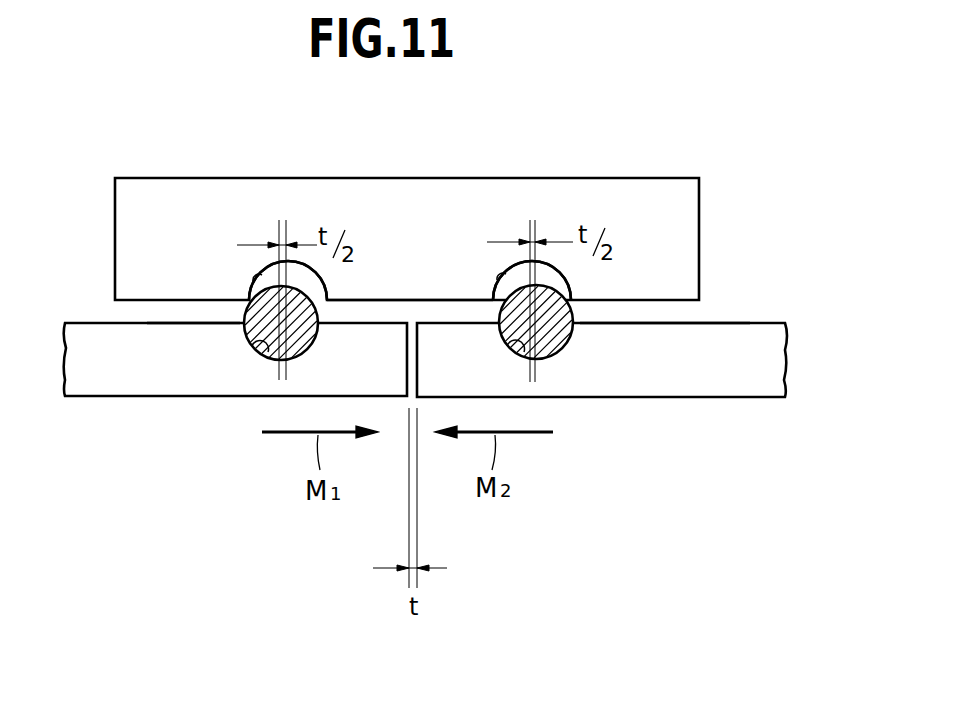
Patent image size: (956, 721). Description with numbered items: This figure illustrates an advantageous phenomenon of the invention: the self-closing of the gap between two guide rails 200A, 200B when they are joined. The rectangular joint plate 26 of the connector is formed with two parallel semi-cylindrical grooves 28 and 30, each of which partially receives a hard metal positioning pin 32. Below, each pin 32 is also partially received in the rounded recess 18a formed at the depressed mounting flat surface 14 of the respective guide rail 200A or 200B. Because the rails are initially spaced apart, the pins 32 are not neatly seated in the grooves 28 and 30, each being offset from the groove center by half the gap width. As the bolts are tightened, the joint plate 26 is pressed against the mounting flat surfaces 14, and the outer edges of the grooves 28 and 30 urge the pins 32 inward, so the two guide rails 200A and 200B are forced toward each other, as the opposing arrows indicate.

The depressed mounting flat surface 14 is at (147, 323).
The rounded recess 18a is at (262, 351).
The joint plate 26 is at (645, 178).
The groove 28 is at (256, 279).
The groove 30 is at (500, 282).
The positioning pin 32 is at (296, 341).
The guide rail 200A is at (128, 396).
The guide rail 200B is at (745, 397).